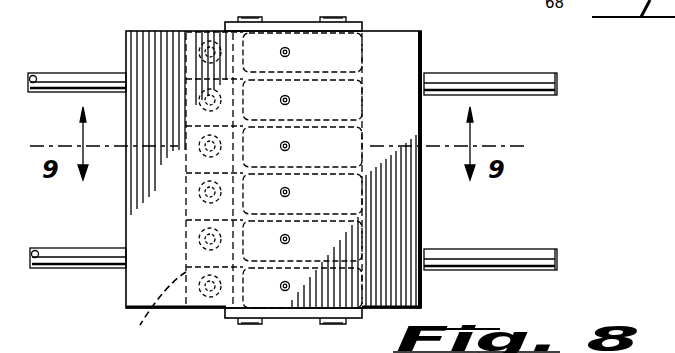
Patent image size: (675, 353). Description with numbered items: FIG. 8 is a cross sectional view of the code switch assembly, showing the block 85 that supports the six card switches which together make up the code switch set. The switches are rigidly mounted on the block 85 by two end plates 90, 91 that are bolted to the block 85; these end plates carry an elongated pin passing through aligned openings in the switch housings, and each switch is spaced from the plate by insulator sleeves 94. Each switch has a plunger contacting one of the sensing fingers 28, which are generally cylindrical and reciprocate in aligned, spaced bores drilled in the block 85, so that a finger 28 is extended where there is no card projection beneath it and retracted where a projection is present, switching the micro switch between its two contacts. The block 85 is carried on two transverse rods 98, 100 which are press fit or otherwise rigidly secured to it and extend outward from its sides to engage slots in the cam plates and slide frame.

The block 85 is at (403, 48).
The sensing finger 28 is at (290, 52).
The end plate 91 is at (297, 26).
The end plate 90 is at (232, 318).
The transverse rod 98 is at (530, 82).
The transverse rod 100 is at (528, 258).
The insulator sleeve 94 is at (157, 311).